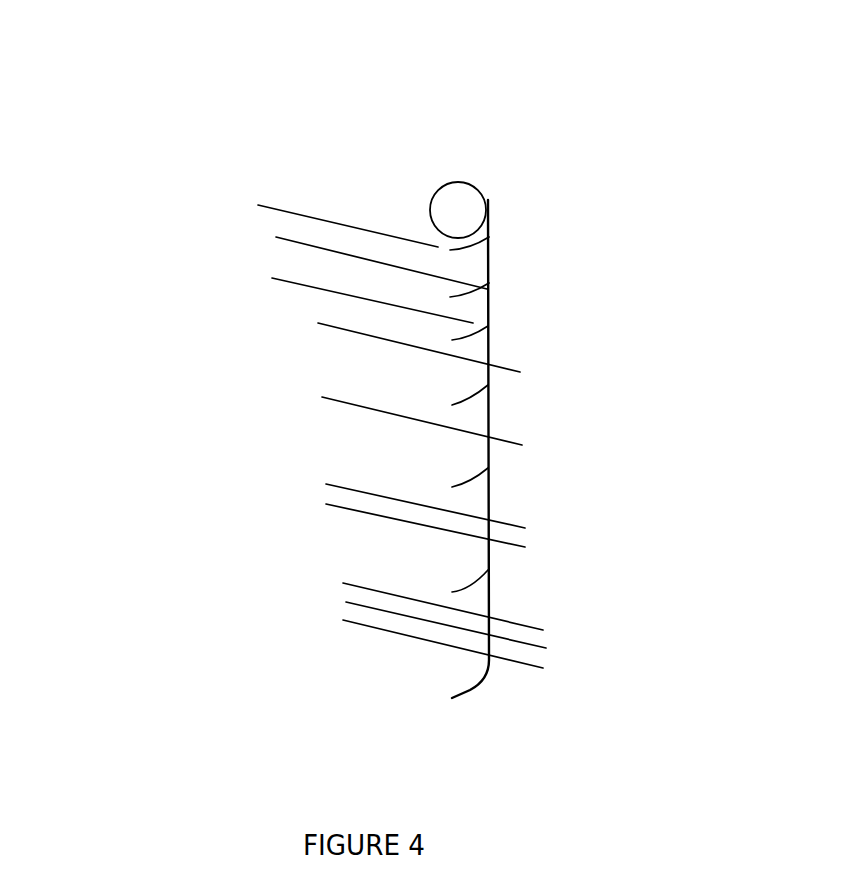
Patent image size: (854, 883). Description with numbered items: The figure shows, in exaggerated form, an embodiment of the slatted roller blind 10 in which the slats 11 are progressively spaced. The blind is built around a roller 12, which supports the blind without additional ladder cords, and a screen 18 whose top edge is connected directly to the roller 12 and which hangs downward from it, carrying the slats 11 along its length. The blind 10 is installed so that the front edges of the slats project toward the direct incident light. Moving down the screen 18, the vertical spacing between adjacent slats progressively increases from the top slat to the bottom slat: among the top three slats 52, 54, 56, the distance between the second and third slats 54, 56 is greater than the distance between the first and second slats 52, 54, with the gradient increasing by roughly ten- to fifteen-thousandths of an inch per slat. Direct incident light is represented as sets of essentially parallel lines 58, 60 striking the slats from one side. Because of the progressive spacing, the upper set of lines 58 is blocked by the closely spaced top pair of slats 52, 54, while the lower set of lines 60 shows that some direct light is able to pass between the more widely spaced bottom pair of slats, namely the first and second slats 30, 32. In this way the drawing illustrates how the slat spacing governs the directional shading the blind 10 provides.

The slatted roller blind 10 is at (193, 695).
The slats 11 is at (232, 137).
The roller 12 is at (467, 176).
The screen 18 is at (489, 452).
The first slat 30 is at (488, 582).
The second slat 32 is at (493, 677).
The first top slat 52 is at (490, 237).
The second top slat 54 is at (489, 289).
The third top slat 56 is at (489, 336).
The set of parallel lines 58 is at (240, 239).
The set of parallel lines 60 is at (312, 597).